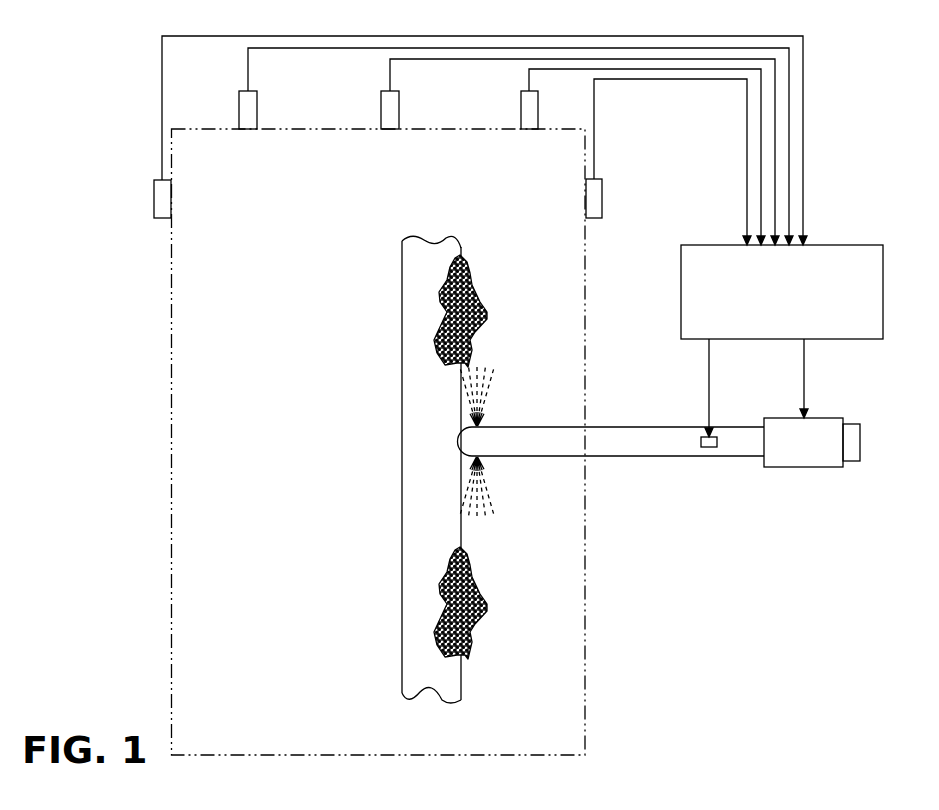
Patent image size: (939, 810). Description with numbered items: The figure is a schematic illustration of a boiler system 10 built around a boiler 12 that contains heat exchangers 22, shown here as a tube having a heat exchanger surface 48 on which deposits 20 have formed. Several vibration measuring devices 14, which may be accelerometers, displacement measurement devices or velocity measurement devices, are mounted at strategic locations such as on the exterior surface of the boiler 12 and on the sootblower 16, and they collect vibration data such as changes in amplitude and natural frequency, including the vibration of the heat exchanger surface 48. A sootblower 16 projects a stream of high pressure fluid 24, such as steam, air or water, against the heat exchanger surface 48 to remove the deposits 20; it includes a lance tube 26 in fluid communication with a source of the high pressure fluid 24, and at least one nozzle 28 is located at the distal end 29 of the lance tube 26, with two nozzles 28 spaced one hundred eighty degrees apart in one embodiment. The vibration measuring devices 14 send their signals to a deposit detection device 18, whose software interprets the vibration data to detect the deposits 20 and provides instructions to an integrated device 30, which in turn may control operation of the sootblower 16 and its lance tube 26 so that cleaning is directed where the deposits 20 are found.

The boiler system 10 is at (66, 134).
The boiler 12 is at (171, 548).
The vibration measuring device 14 is at (154, 200).
The sootblower 16 is at (843, 412).
The deposit detection device 18 is at (883, 292).
The deposit 20 is at (487, 320).
The heat exchanger 22 is at (396, 328).
The high pressure fluid 24 is at (488, 398).
The lance tube 26 is at (636, 433).
The nozzle 28 is at (485, 423).
The distal end 29 is at (457, 441).
The integrated device 30 is at (709, 447).
The heat exchanger surface 48 is at (457, 400).